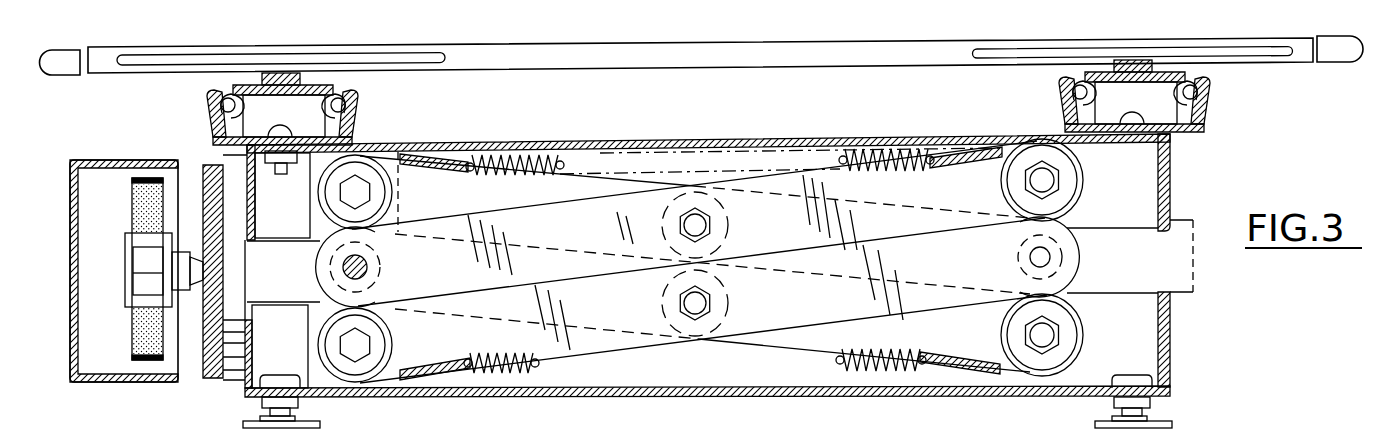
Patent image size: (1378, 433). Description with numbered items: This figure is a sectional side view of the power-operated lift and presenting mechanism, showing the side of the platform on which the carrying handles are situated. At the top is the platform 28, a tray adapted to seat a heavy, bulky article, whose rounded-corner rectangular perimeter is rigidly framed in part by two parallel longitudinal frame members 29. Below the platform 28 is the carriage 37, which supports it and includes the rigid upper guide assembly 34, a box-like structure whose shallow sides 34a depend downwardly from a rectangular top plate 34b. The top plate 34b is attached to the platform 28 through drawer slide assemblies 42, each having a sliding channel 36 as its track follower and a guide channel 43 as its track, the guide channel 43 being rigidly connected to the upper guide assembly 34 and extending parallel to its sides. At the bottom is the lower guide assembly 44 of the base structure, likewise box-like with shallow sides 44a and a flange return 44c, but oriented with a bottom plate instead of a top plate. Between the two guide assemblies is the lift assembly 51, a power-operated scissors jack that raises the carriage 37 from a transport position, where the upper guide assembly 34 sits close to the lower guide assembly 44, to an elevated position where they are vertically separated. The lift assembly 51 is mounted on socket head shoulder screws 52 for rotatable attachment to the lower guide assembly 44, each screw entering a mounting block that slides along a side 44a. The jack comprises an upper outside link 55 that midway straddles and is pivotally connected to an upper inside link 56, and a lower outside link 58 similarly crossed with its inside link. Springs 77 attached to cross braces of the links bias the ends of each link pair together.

The platform 28 is at (702, 37).
The longitudinal frame member 29 is at (563, 48).
The upper guide assembly 34 is at (758, 171).
The shallow side 34a is at (1172, 203).
The top plate 34b is at (817, 140).
The sliding channel 36 is at (215, 87).
The carriage 37 is at (1215, 127).
The drawer slide assembly 42 is at (374, 85).
The guide channel 43 is at (355, 127).
The lower guide assembly 44 is at (752, 361).
The shallow side 44a is at (1170, 358).
The flange return 44c is at (768, 394).
The lift assembly 51 is at (757, 133).
The socket head shoulder screw 52 is at (367, 193).
The upper outside link 55 is at (698, 300).
The upper inside link 56 is at (605, 198).
The lower outside link 58 is at (583, 347).
The spring 77 is at (505, 168).